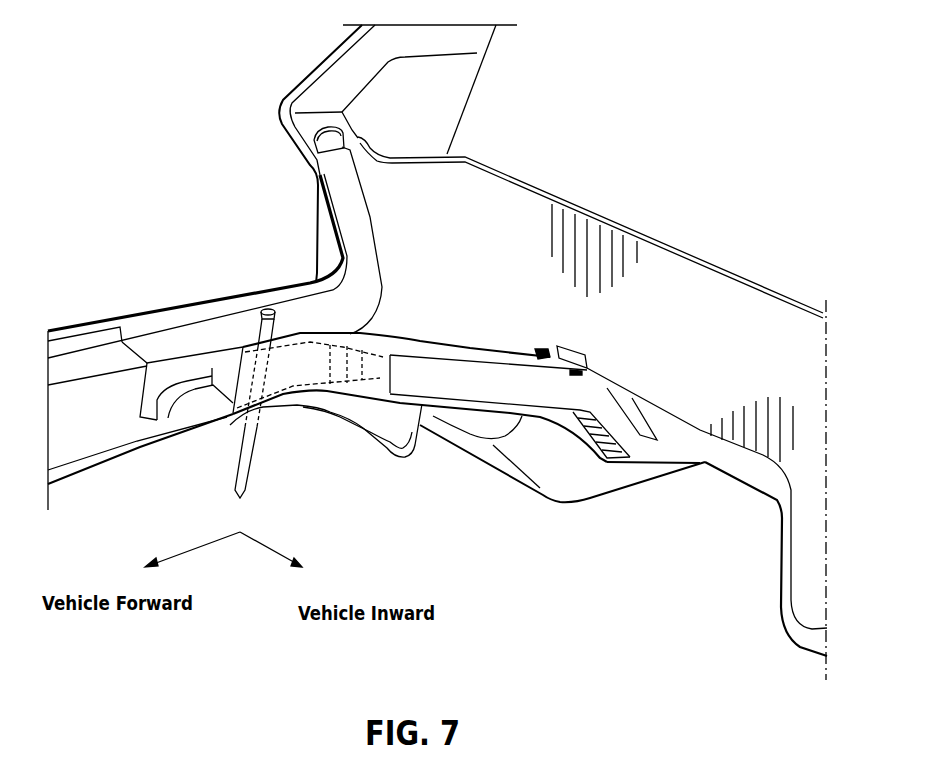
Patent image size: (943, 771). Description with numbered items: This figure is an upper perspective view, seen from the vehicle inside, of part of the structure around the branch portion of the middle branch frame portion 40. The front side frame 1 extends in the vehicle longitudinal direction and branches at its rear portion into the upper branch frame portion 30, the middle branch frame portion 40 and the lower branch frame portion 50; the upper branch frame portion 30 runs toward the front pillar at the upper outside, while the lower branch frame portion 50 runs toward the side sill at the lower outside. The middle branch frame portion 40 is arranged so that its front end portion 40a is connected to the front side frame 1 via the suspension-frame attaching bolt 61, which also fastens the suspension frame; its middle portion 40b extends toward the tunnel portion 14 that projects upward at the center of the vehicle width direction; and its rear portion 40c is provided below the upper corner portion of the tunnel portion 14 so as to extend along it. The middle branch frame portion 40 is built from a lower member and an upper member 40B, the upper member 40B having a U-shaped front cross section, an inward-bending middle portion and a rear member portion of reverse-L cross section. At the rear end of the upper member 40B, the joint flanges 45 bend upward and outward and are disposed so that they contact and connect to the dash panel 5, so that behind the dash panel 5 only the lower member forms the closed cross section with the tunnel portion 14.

The front side frame 1 is at (112, 323).
The dash panel 5 is at (693, 310).
The tunnel portion 14 is at (723, 458).
The upper branch frame portion 30 is at (343, 258).
The middle branch frame portion 40 is at (421, 342).
The front end portion 40a is at (288, 377).
The middle portion 40b is at (432, 398).
The rear portion 40c is at (673, 464).
The upper member 40B is at (543, 348).
The joint flange 45 is at (552, 352).
The lower branch frame portion 50 is at (370, 442).
The suspension-frame attaching bolt 61 is at (240, 467).